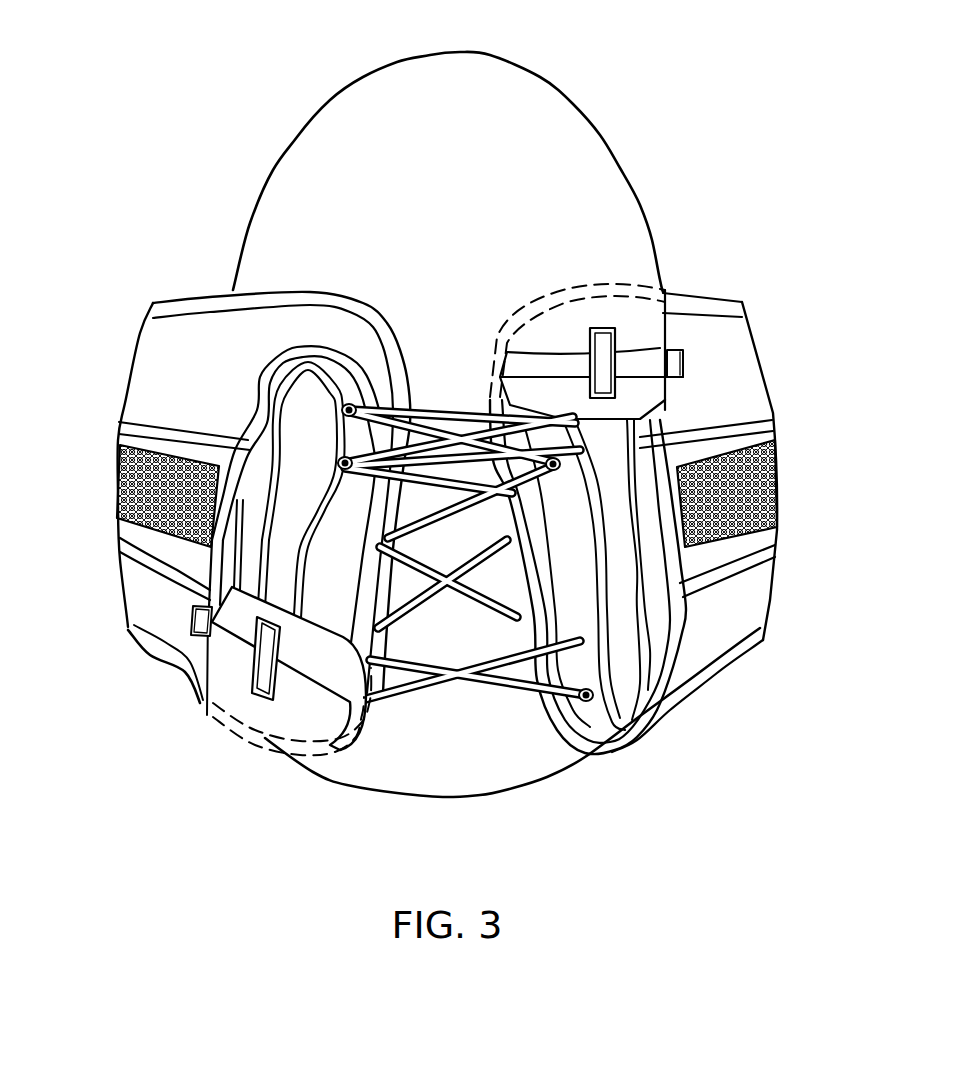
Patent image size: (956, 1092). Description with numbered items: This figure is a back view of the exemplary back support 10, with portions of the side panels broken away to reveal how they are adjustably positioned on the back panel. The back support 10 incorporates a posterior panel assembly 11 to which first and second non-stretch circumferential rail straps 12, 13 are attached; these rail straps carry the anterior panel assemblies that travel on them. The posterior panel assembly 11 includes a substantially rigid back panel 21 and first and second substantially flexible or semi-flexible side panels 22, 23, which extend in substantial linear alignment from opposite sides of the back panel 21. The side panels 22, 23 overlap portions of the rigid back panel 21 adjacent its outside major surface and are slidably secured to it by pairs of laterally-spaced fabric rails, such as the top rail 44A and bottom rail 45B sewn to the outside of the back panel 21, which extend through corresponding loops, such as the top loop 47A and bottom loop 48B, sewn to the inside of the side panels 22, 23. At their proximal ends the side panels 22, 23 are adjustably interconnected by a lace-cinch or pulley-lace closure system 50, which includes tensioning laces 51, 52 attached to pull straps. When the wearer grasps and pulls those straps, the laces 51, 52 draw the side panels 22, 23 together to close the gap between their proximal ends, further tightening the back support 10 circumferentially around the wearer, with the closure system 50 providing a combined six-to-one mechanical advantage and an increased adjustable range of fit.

The back support 10 is at (150, 100).
The posterior panel assembly 11 is at (700, 240).
The first non-stretch circumferential rail strap 12 is at (778, 453).
The second non-stretch circumferential rail strap 13 is at (118, 468).
The back panel 21 is at (338, 127).
The first side panel 22 is at (733, 352).
The second side panel 23 is at (167, 380).
The top fabric rail 44A is at (565, 365).
The bottom fabric rail 45B is at (313, 687).
The top loop 47A is at (622, 340).
The bottom loop 48B is at (250, 680).
The lace-cinch closure system 50 is at (446, 270).
The tensioning lace 51 is at (145, 567).
The tensioning lace 52 is at (710, 580).